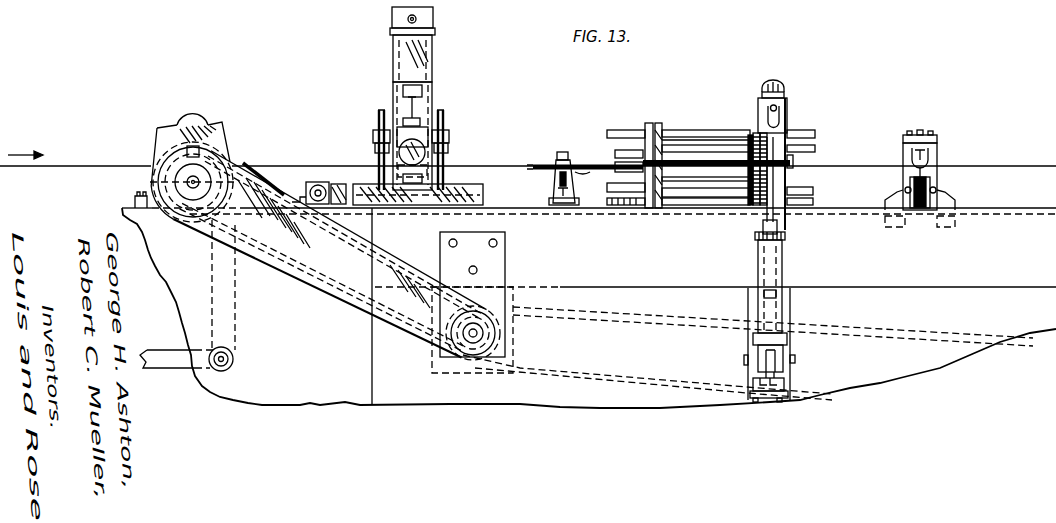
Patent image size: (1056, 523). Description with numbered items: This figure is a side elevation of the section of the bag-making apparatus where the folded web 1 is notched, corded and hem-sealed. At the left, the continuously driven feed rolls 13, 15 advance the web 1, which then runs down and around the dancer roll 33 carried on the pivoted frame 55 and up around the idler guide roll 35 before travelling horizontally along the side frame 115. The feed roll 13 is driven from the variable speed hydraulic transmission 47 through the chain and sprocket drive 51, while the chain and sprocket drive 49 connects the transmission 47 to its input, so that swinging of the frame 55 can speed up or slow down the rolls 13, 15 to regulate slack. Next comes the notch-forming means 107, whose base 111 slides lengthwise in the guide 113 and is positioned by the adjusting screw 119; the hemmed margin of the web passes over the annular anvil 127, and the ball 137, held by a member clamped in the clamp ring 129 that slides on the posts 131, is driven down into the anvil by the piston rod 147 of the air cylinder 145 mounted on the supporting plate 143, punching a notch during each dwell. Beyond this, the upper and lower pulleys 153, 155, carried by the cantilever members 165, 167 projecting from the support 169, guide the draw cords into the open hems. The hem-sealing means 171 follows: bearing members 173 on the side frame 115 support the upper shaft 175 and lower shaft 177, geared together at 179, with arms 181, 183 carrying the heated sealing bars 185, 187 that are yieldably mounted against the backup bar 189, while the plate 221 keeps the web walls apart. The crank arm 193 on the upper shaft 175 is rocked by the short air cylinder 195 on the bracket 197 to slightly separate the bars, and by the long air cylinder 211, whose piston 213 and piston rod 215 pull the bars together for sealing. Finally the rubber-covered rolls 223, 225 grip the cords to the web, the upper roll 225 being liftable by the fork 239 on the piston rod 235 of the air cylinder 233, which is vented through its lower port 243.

The continuous web 1 is at (75, 160).
The feed roll 13 is at (169, 220).
The feed roll 15 is at (176, 136).
The dancer roll 33 is at (233, 352).
The idler guide roll 35 is at (278, 171).
The variable speed hydraulic transmission 47 is at (463, 368).
The chain and sprocket drive 49 is at (925, 330).
The chain and sprocket drive 51 is at (311, 276).
The pivoted frame 55 is at (165, 353).
The notch-forming means 107 is at (409, 98).
The base 111 is at (447, 200).
The guide 113 is at (452, 208).
The side frame 115 is at (608, 251).
The adjusting screw 119 is at (353, 182).
The annular anvil 127 is at (378, 172).
The clamp ring 129 is at (378, 142).
The posts 131 is at (383, 118).
The ball 137 is at (441, 158).
The supporting plate 143 is at (428, 100).
The air cylinder 145 is at (432, 62).
The piston rod 147 is at (405, 108).
The pulley 153 is at (580, 160).
The pulley 155 is at (580, 172).
The upper cantilever member 165 is at (560, 160).
The lower cantilever member 167 is at (570, 186).
The support 169 is at (553, 194).
The hem-sealing means 171 is at (688, 113).
The bearing members 173 is at (645, 142).
The upper shaft 175 is at (672, 132).
The lower shaft 177 is at (662, 190).
The gearing 179 is at (758, 135).
The arms 181 is at (650, 130).
The arms 183 is at (641, 205).
The upper sealing bar 185 is at (640, 140).
The lower sealing bar 187 is at (635, 173).
The backup bar 189 is at (665, 143).
The crank arm 193 is at (781, 108).
The short air cylinder 195 is at (781, 85).
The bracket 197 is at (786, 98).
The air cylinder 211 is at (782, 263).
The piston 213 is at (762, 298).
The piston rod 215 is at (775, 205).
The plate 221 is at (633, 162).
The rubber-covered roll 223 is at (903, 177).
The rubber-covered roll 225 is at (906, 160).
The air cylinder 233 is at (937, 202).
The piston rod 235 is at (910, 186).
The fork 239 is at (930, 156).
The lower port 243 is at (918, 210).